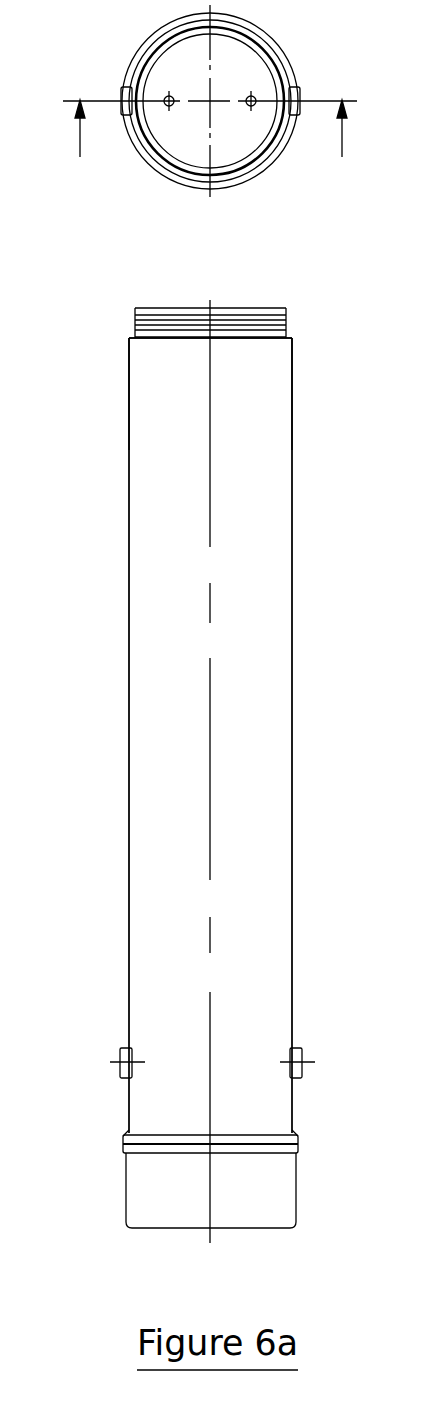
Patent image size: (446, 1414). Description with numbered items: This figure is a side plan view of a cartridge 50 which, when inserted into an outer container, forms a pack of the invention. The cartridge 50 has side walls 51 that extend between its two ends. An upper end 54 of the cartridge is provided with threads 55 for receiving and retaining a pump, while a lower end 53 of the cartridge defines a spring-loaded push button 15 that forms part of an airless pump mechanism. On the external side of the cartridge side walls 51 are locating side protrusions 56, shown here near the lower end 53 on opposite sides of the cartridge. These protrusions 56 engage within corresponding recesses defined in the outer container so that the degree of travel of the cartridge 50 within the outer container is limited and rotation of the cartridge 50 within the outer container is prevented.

The push button 15 is at (275, 1183).
The cartridge 50 is at (110, 668).
The side walls 51 is at (292, 668).
The lower end 53 is at (109, 1201).
The upper end 54 is at (321, 438).
The threads 55 is at (286, 322).
The locating side protrusions 56 is at (128, 1048).